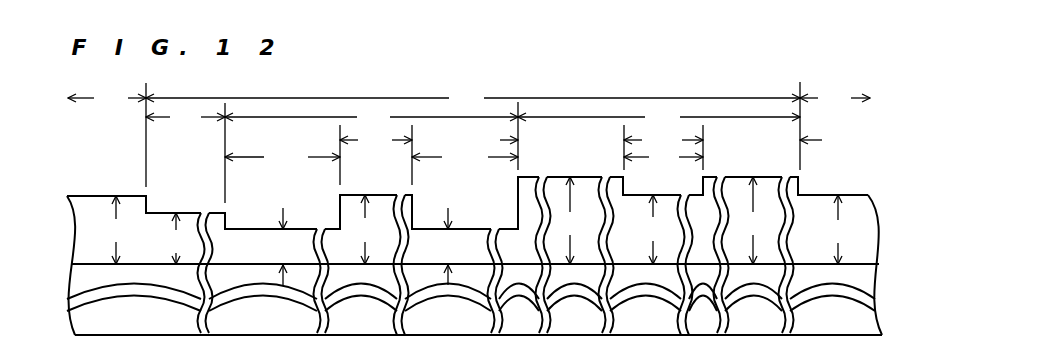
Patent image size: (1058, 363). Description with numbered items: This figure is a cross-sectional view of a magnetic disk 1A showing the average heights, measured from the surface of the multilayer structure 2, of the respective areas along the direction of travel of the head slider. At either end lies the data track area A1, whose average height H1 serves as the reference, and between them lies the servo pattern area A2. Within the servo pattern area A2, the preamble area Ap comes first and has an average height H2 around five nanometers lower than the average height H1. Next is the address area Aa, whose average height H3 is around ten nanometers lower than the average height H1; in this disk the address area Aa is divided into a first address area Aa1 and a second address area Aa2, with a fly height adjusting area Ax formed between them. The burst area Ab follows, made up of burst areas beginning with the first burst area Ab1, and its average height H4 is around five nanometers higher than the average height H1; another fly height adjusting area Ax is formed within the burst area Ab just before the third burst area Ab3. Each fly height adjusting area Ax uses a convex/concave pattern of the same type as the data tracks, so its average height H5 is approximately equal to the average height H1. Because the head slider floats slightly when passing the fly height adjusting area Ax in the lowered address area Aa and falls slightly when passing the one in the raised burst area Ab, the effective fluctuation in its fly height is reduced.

The magnetic disk 1A is at (400, 72).
The multilayer structure 2 is at (848, 317).
The data track area A1 is at (469, 98).
The servo pattern area A2 is at (473, 98).
The preamble area Ap is at (185, 117).
The address area Aa is at (371, 117).
The burst area Ab is at (659, 117).
The fly height adjusting area Ax is at (521, 150).
The first address area Aa1 is at (282, 158).
The second address area Aa2 is at (465, 158).
The first burst area Ab1 is at (571, 141).
The third burst area Ab3 is at (752, 141).
The average height of the data track area H1 is at (477, 229).
The average height of the preamble area H2 is at (176, 238).
The average height of the address area H3 is at (366, 246).
The average height of the burst area H4 is at (661, 220).
The average height of the fly height adjusting area H5 is at (510, 229).